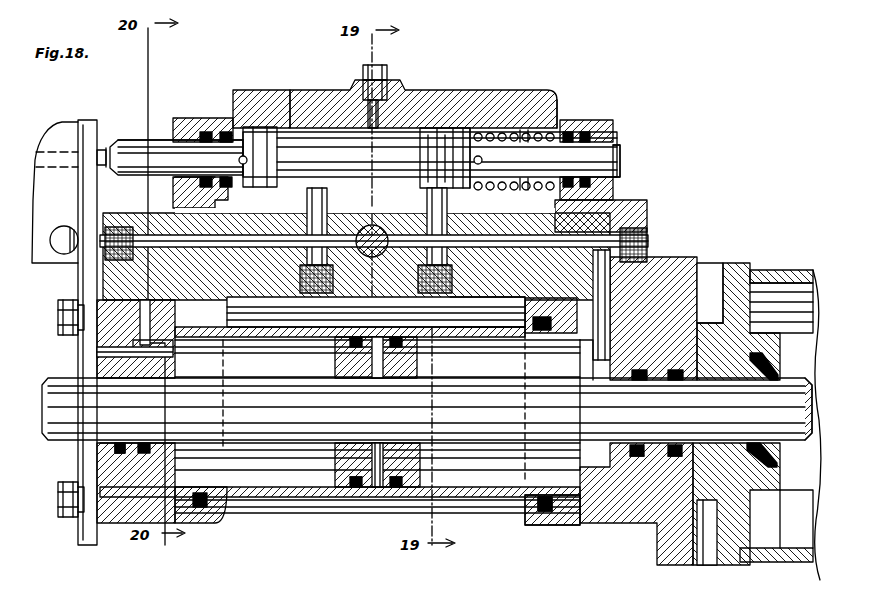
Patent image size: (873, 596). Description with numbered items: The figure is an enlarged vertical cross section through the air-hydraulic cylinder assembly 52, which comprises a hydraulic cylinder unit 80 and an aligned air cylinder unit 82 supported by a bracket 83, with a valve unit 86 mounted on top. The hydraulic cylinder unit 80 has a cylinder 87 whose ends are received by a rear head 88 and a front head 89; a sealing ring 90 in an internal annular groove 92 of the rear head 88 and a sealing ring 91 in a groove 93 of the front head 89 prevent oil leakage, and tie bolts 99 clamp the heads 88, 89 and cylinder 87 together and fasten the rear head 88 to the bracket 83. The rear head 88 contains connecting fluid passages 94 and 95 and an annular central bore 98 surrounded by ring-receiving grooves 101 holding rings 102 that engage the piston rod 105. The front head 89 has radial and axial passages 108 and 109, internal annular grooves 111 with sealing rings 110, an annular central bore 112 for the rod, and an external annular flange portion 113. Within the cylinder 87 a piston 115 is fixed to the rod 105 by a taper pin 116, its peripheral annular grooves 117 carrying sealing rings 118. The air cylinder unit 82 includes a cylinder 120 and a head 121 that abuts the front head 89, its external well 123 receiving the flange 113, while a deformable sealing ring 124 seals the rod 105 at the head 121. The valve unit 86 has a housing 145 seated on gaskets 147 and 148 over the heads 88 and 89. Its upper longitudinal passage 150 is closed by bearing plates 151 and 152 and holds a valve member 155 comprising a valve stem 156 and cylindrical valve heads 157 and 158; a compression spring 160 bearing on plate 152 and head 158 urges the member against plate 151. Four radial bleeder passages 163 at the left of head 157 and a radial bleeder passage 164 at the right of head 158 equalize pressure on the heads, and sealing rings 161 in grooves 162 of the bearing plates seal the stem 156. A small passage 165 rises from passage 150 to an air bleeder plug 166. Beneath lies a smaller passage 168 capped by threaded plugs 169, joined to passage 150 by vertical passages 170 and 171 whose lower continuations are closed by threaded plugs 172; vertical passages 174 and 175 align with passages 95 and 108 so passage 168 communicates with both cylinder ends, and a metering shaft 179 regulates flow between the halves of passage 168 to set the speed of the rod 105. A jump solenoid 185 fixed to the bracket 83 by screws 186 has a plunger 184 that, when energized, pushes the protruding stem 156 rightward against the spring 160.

The jump solenoid 185 is at (65, 125).
The screws 186 is at (64, 228).
The bracket 83 is at (88, 535).
The plunger 184 is at (115, 150).
The tie bolts 99 is at (66, 321).
The bearing plate 151 is at (188, 118).
The valve member 155 is at (170, 130).
The valve stem 156 is at (128, 150).
The grooves 162 is at (226, 130).
The valve head 157 is at (258, 125).
The radial bleeder passages 163 is at (275, 125).
The passage 150 is at (297, 127).
The housing 145 is at (445, 92).
The air bleeder plug 166 is at (385, 66).
The passage 165 is at (386, 120).
The valve head 158 is at (465, 126).
The valve unit 86 is at (535, 83).
The compression spring 160 is at (525, 130).
The bearing plate 152 is at (605, 120).
The air-hydraulic cylinder assembly 52 is at (697, 153).
The sealing rings 161 is at (618, 165).
The vertical passage 171 is at (425, 178).
The radial bleeder passage 164 is at (484, 160).
The passage 168 is at (630, 200).
The vertical passage 170 is at (318, 197).
The vertical passage 174 is at (140, 272).
The metering shaft 179 is at (365, 225).
The threaded plugs 169 is at (115, 227).
The threaded plugs 172 is at (308, 292).
The vertical passage 175 is at (605, 278).
The connecting fluid passage 95 is at (148, 316).
The connecting fluid passage 94 is at (135, 342).
The ring-receiving grooves 101 is at (100, 349).
The gasket 147 is at (229, 305).
The gasket 148 is at (522, 302).
The piston rod 105 is at (262, 427).
The sealing rings 118 is at (383, 378).
The piston 115 is at (345, 460).
The taper pin 116 is at (385, 457).
The annular grooves 117 is at (396, 488).
The annular central bore 112 is at (572, 440).
The axial passage 109 is at (585, 377).
The hydraulic cylinder unit 80 is at (497, 505).
The rings 102 is at (173, 447).
The annular central bore 98 is at (150, 448).
The rear head 88 is at (125, 523).
The internal annular groove 92 is at (220, 518).
The sealing ring 90 is at (202, 508).
The cylinder 87 is at (297, 498).
The sealing ring 91 is at (548, 526).
The internal annular groove 93 is at (557, 510).
The front head 89 is at (622, 520).
The radial passage 108 is at (635, 445).
The sealing rings 110 is at (674, 445).
The internal annular grooves 111 is at (675, 456).
The external well 123 is at (722, 347).
The head 121 is at (752, 270).
The external annular flange portion 113 is at (722, 465).
The cylinder 120 is at (795, 270).
The deformable sealing ring 124 is at (763, 382).
The air cylinder unit 82 is at (803, 572).